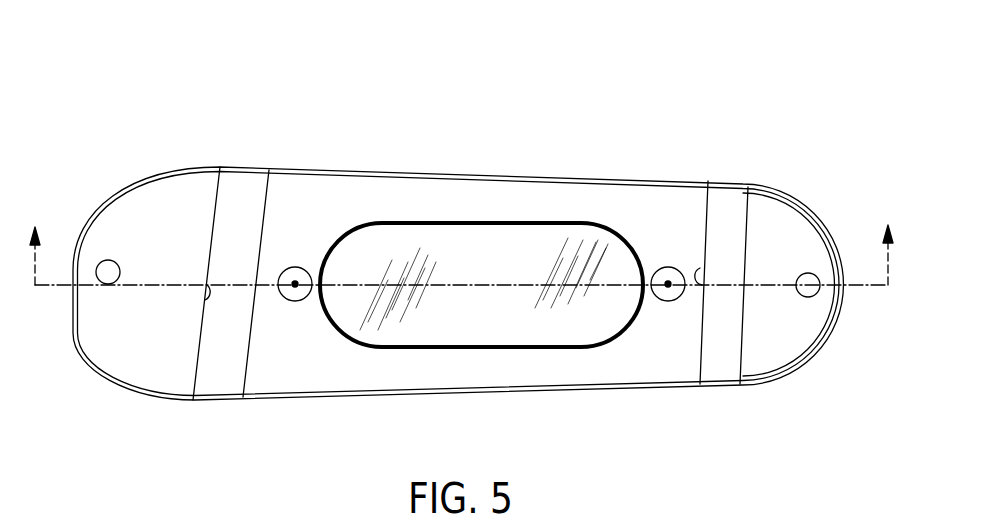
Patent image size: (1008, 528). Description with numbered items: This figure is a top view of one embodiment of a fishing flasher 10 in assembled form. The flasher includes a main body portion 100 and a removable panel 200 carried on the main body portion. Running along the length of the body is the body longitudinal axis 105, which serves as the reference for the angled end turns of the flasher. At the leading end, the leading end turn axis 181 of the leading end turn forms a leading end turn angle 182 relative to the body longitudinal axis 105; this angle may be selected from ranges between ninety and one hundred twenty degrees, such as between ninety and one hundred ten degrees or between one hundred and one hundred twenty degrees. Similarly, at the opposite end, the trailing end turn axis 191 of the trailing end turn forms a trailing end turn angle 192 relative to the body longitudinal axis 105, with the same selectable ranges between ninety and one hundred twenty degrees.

The fishing flasher 10 is at (678, 90).
The main body portion 100 is at (437, 200).
The body longitudinal axis 105 is at (862, 288).
The leading end turn axis 181 is at (702, 363).
The leading end turn angle 182 is at (698, 270).
The trailing end turn axis 191 is at (265, 200).
The trailing end turn angle 192 is at (215, 298).
The removable panel 200 is at (560, 318).